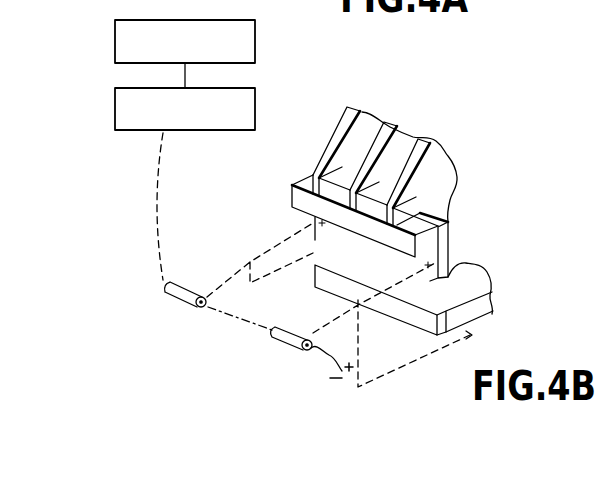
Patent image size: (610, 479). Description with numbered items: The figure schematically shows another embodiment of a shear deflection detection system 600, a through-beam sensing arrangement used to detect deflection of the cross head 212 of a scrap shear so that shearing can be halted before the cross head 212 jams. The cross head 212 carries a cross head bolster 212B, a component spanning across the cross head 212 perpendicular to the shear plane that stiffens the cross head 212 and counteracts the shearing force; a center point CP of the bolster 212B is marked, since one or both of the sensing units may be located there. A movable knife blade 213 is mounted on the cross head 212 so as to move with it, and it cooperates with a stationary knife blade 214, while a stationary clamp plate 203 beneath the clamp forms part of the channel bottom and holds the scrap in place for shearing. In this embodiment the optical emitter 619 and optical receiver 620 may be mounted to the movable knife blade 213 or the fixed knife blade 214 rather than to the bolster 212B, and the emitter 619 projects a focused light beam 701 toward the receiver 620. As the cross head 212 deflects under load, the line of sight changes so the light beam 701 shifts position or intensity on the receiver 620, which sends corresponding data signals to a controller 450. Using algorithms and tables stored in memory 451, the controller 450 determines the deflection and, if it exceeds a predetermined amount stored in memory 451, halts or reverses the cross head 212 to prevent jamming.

The memory 451 is at (114, 42).
The controller 450 is at (257, 108).
The cross head bolster 212B is at (303, 181).
The cross head 212 is at (435, 173).
The center point CP is at (352, 222).
The movable knife blade 213 is at (450, 258).
The stationary clamp plate 203 is at (467, 290).
The stationary knife blade 214 is at (493, 311).
The optical receiver 620 is at (182, 304).
The optical emitter 619 is at (288, 347).
The light beam 701 is at (267, 328).
The shear deflection detection system 600 is at (205, 345).